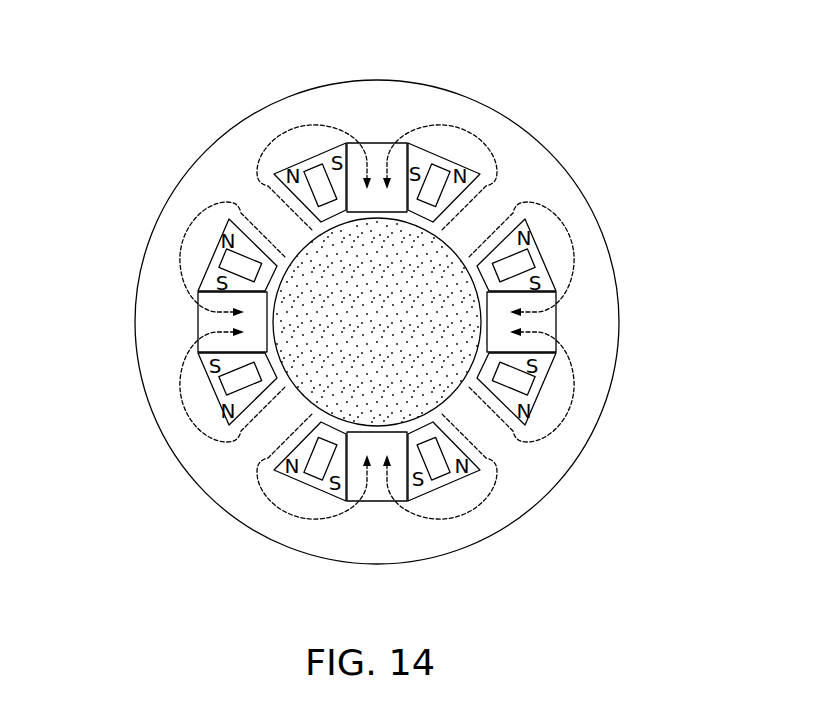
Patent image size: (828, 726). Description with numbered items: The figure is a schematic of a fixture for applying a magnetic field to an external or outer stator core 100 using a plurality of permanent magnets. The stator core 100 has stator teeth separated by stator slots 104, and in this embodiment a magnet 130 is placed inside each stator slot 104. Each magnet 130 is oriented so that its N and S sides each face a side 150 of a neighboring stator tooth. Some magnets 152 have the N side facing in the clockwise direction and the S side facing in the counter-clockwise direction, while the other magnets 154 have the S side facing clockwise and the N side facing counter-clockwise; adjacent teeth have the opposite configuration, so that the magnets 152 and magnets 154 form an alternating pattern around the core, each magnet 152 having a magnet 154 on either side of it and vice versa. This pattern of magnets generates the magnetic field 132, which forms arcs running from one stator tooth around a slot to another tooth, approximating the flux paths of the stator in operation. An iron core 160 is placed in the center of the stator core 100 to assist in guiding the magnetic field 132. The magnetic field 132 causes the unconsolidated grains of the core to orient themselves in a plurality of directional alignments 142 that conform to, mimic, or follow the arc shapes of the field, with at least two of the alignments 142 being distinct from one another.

The stator core 100 is at (556, 156).
The stator slot 104 is at (548, 232).
The magnet 130 is at (405, 145).
The magnetic field 132 is at (488, 497).
The directional alignment 142 is at (180, 350).
The side of the stator tooth 150 is at (190, 245).
The magnet 152 is at (440, 165).
The magnet 154 is at (320, 172).
The iron core 160 is at (456, 345).